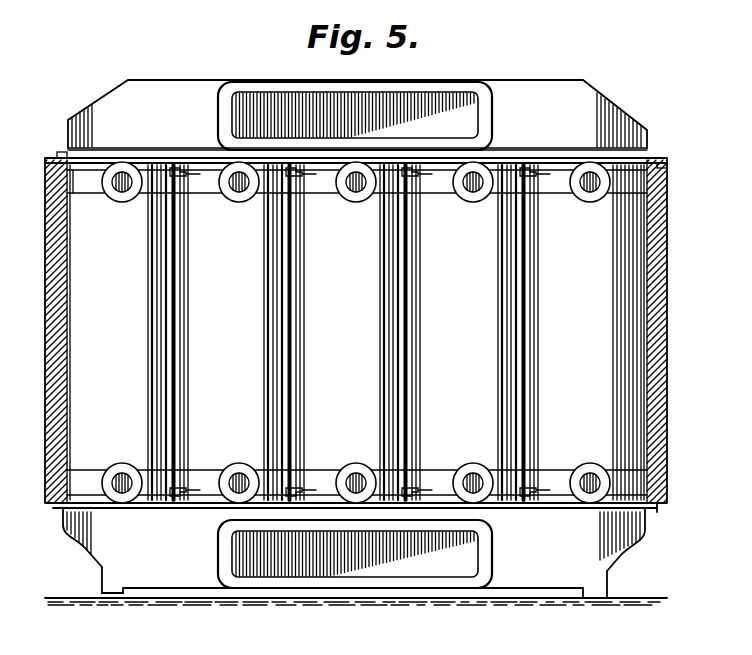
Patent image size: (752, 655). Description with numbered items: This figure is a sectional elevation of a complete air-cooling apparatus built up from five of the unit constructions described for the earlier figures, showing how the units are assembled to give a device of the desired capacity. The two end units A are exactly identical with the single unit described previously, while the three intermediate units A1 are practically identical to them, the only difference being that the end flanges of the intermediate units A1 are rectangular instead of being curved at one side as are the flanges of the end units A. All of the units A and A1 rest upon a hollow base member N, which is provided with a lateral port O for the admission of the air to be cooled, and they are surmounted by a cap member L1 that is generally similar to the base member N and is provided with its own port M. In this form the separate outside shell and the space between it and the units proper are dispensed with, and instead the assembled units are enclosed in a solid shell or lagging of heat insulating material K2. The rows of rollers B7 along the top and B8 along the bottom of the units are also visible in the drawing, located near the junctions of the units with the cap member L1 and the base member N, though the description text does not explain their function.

The port M is at (428, 103).
The cap member L1 is at (568, 97).
The shell of heat insulating material K2 is at (657, 307).
The upper guide rollers B7 is at (597, 209).
The lower guide rollers B8 is at (597, 456).
The end units A is at (357, 332).
The intermediate units A1 is at (384, 332).
The hollow base member N is at (573, 563).
The lateral port O is at (435, 570).